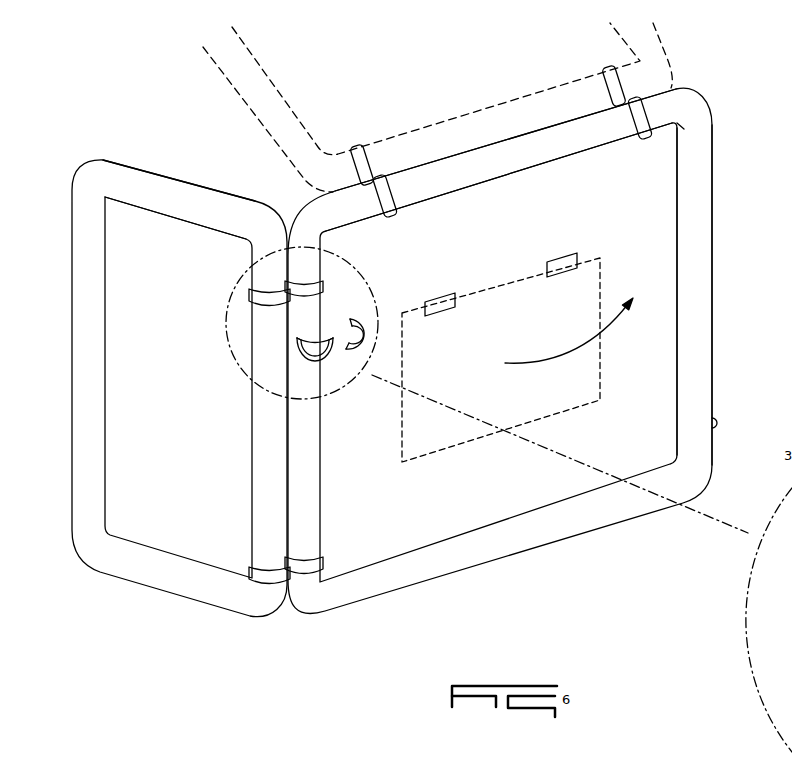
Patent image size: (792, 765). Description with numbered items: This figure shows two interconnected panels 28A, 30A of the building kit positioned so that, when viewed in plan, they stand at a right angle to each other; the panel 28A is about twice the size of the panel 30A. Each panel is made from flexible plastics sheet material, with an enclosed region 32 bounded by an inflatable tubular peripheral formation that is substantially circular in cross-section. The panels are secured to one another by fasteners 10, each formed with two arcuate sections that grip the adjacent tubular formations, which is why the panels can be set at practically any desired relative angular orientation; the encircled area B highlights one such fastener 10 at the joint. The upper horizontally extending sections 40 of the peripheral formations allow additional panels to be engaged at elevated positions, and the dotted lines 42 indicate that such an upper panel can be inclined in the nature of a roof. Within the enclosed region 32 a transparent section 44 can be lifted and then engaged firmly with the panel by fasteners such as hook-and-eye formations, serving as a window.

The panel 30A is at (70, 150).
The panel 28A is at (718, 166).
The upper horizontally extending section 40 is at (187, 210).
The dotted lines 42 is at (245, 108).
The enclosed region 32 is at (700, 272).
The transparent section 44 is at (436, 455).
The fastener 10 is at (367, 338).
The detail area B is at (362, 282).